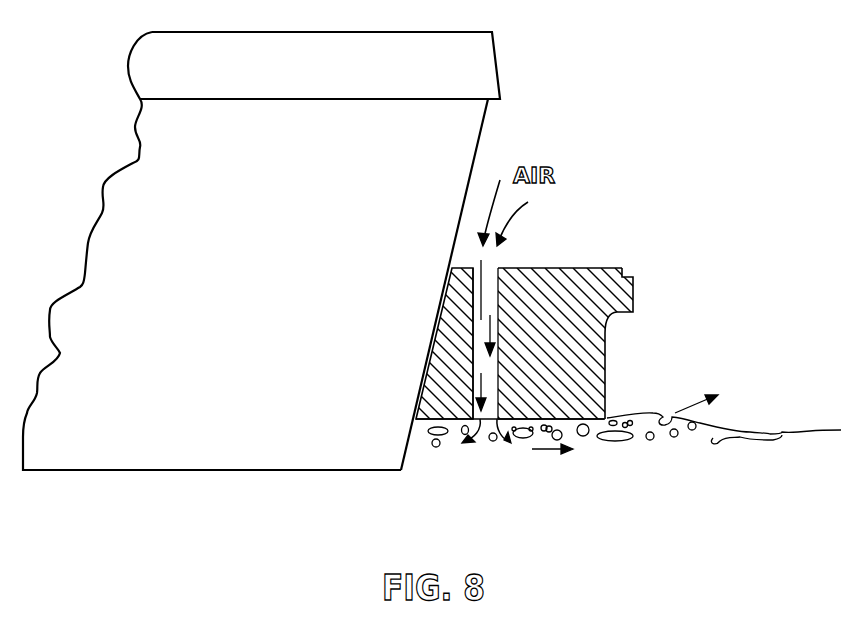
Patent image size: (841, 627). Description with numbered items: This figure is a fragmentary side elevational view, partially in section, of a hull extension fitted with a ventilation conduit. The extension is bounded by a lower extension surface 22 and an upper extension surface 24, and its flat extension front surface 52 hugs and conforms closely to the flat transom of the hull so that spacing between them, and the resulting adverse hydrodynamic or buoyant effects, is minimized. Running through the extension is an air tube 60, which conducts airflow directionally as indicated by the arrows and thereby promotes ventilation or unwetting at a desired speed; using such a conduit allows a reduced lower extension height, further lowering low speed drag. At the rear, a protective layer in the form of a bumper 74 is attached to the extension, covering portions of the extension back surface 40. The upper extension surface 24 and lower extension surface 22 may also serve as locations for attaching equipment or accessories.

The lower extension surface 22 is at (575, 422).
The upper extension surface 24 is at (612, 266).
The extension back surface 40 is at (607, 360).
The extension front surface 52 is at (432, 340).
The air tube 60 is at (492, 292).
The bumper 74 is at (637, 288).